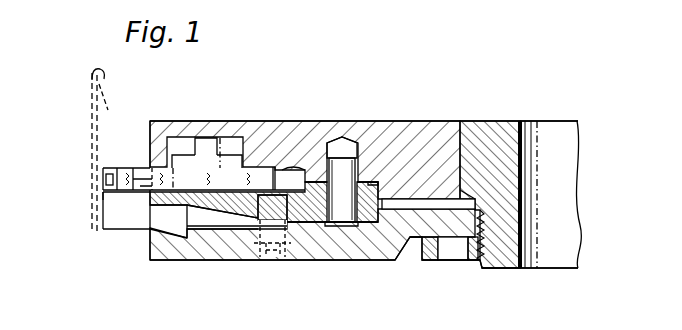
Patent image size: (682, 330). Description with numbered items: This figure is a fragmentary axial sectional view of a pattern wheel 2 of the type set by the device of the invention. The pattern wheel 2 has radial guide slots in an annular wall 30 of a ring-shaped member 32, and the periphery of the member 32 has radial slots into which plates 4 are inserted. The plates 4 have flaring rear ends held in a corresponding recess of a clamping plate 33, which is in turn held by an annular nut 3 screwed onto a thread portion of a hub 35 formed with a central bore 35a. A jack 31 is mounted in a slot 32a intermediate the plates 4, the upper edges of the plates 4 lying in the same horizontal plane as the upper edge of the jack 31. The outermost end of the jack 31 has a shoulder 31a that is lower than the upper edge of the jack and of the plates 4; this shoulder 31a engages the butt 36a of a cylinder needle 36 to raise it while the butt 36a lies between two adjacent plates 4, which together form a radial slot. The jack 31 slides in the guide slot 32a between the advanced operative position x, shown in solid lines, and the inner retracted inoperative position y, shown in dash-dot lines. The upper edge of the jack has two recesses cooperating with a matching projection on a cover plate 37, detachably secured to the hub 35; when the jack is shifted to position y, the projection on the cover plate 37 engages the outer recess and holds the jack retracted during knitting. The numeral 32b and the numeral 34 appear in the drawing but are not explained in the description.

The pattern wheel 2 is at (147, 275).
The annular nut 3 is at (440, 253).
The plates 4 is at (103, 168).
The annular wall 30 is at (228, 160).
The jack 31 is at (120, 170).
The shoulder 31a is at (103, 196).
The ring-shaped member 32 is at (315, 216).
The guide slots 32a is at (178, 157).
The recess of clamping ring 32b is at (220, 217).
The clamping plate 33 is at (388, 248).
The pin 34 is at (258, 252).
The hub 35 is at (478, 132).
The central bore 35a is at (530, 125).
The cylinder needle 36 is at (92, 124).
The butt 36a is at (100, 174).
The cover plate 37 is at (403, 132).
The advanced operative position x is at (276, 167).
The inner retracted inoperative position y is at (297, 168).